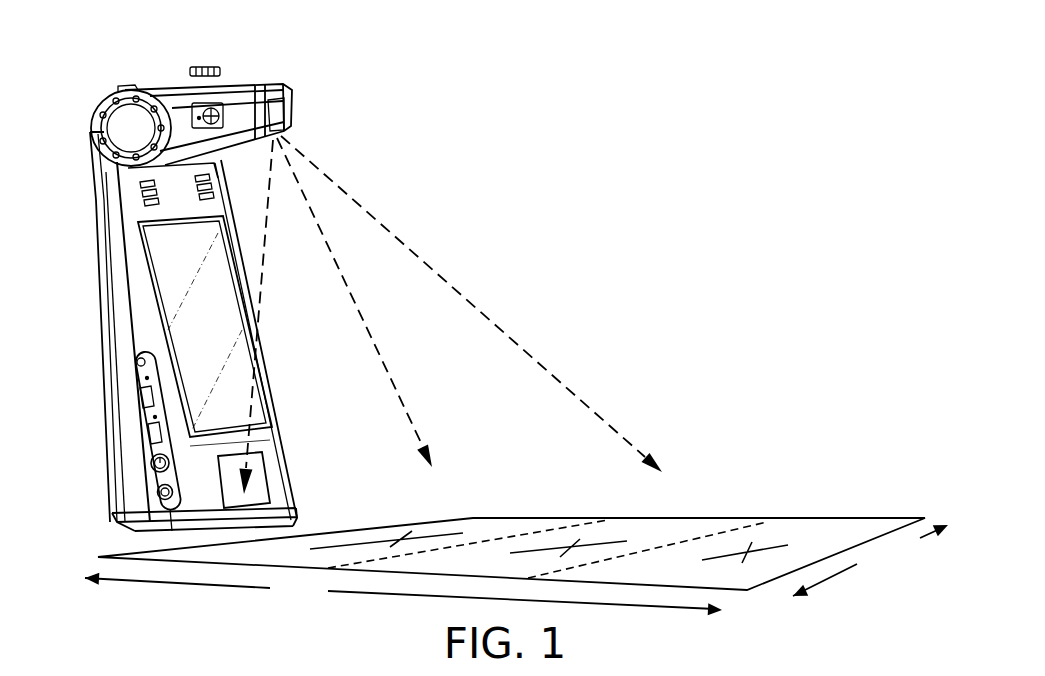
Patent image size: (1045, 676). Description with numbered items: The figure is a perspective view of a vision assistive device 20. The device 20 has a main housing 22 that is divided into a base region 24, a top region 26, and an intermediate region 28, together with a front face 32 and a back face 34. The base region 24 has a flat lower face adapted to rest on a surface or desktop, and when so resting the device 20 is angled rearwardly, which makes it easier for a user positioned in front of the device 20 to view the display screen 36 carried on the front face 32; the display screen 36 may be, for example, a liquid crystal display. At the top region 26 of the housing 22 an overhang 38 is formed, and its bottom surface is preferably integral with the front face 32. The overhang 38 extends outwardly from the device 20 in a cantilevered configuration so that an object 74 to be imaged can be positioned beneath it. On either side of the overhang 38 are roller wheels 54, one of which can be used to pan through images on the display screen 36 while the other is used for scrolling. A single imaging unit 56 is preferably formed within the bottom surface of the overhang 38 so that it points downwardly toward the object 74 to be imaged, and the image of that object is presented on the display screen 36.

The device 20 is at (416, 112).
The main housing 22 is at (110, 305).
The base region 24 is at (113, 517).
The top region 26 is at (95, 165).
The intermediate region 28 is at (105, 256).
The front face 32 is at (290, 468).
The back face 34 is at (112, 450).
The display screen 36 is at (191, 338).
The overhang 38 is at (280, 97).
The roller wheels 54 is at (125, 116).
The imaging unit 56 is at (349, 128).
The object 74 is at (848, 527).